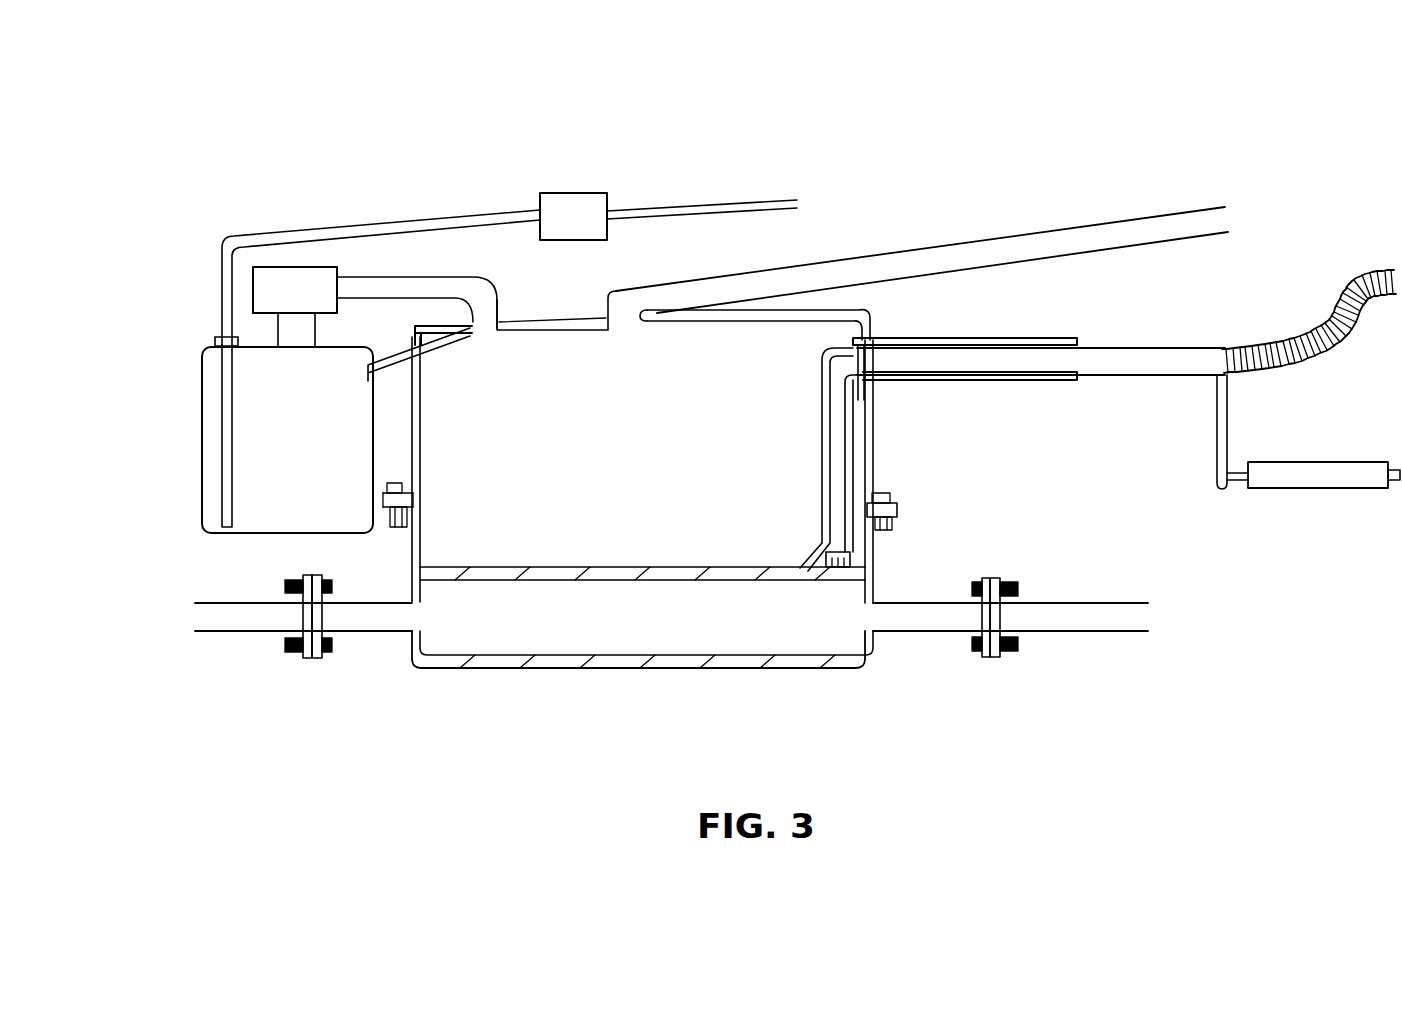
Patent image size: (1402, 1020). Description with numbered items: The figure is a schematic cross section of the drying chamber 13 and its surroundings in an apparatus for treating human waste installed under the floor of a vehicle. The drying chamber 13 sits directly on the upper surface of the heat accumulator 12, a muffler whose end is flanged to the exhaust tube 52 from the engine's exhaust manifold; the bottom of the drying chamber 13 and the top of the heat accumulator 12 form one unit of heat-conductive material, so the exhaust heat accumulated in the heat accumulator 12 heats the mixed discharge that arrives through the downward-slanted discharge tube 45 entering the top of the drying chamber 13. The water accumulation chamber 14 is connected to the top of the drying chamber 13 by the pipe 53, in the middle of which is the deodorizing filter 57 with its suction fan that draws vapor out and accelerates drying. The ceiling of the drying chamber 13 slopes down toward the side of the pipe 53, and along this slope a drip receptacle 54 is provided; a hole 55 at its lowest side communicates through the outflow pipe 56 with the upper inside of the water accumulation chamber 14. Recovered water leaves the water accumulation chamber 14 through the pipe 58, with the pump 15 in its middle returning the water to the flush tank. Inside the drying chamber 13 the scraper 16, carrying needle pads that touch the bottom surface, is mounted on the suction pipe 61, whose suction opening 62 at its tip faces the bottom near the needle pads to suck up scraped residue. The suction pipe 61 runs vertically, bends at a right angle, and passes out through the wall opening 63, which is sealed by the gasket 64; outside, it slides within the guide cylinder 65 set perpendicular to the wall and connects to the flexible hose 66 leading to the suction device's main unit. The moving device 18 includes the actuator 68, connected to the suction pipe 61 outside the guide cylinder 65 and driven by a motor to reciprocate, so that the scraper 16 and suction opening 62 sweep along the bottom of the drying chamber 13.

The heat accumulator 12 is at (510, 663).
The drying chamber 13 is at (640, 555).
The water accumulation chamber 14 is at (205, 437).
The pump 15 is at (583, 190).
The scraper 16 is at (855, 565).
The moving device 18 is at (1216, 421).
The discharge tube 45 is at (1018, 238).
The exhaust tube 52 is at (247, 630).
The pipe 53 is at (427, 307).
The drip receptacle 54 is at (460, 330).
The hole 55 is at (390, 350).
The outflow pipe 56 is at (370, 310).
The deodorizing filter 57 is at (273, 267).
The pipe 58 is at (482, 210).
The suction pipe 61 is at (847, 477).
The suction opening 62 is at (805, 575).
The wall opening 63 is at (872, 337).
The gasket 64 is at (873, 422).
The guide cylinder 65 is at (1048, 330).
The flexible hose 66 is at (1264, 337).
The actuator 68 is at (1327, 488).